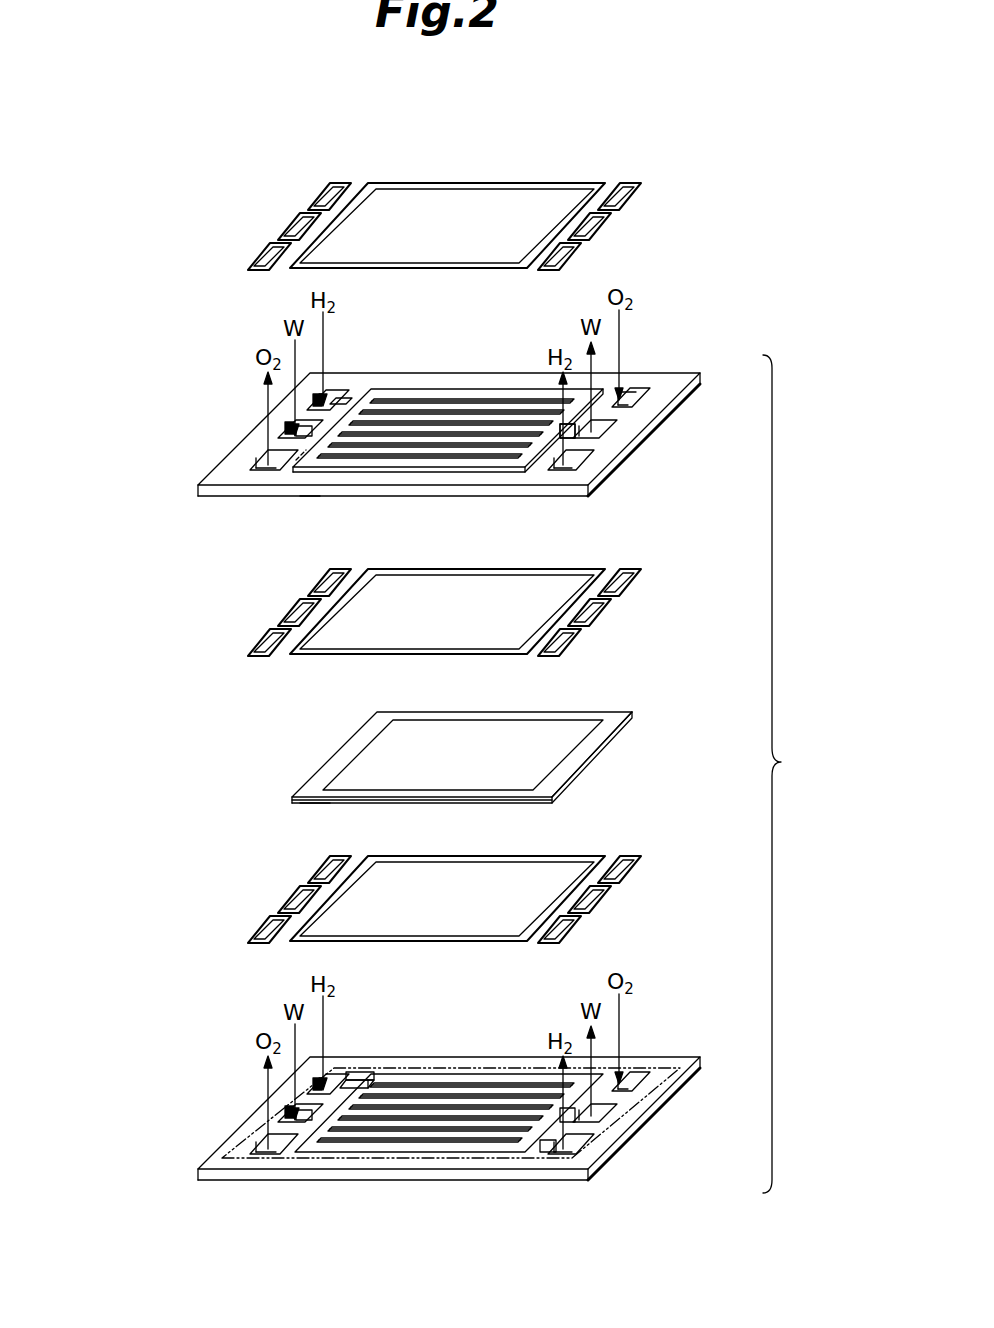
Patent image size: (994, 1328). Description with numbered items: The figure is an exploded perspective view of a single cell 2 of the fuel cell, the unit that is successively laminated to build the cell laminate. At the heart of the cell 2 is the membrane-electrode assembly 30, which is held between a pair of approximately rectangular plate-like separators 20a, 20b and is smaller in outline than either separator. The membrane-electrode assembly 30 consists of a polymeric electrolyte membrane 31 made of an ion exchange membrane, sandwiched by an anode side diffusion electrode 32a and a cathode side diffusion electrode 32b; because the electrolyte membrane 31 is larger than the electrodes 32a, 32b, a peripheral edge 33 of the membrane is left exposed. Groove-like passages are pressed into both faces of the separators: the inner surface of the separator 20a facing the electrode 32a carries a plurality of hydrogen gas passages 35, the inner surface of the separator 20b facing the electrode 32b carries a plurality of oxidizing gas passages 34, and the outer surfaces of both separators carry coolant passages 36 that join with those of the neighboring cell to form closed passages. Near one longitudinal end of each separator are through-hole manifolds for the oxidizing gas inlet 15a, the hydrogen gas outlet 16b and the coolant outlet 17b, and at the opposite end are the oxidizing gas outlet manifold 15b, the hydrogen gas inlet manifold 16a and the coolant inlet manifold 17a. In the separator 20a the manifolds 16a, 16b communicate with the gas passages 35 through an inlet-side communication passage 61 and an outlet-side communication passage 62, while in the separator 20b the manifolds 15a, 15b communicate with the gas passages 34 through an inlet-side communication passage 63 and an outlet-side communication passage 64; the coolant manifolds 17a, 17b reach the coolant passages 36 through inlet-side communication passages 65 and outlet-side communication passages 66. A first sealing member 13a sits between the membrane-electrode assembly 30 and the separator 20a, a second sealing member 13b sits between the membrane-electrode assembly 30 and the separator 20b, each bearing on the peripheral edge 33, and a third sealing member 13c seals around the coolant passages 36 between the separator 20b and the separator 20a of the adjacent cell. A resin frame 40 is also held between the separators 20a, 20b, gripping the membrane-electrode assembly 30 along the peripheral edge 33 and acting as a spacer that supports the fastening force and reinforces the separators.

The cell 2 is at (782, 774).
The first sealing member 13a is at (262, 885).
The second sealing member 13b is at (262, 598).
The third sealing member 13c is at (262, 212).
The manifold on the inlet side of the oxidizing gas 15a is at (258, 463).
The manifold on the outlet side of the oxidizing gas 15b is at (640, 400).
The manifold on the inlet side of the hydrogen gas 16a is at (566, 470).
The manifold on the outlet side of the hydrogen gas 16b is at (310, 400).
The manifold on the inlet side of the coolant 17a is at (605, 432).
The manifold on the outlet side of the coolant 17b is at (286, 428).
The separator 20a is at (188, 1181).
The separator 20b is at (190, 492).
The membrane-electrode assembly 30 is at (203, 715).
The polymeric electrolyte membrane 31 is at (302, 785).
The anode side diffusion electrode 32a is at (322, 805).
The cathode side diffusion electrode 32b is at (345, 762).
The peripheral edge 33 is at (593, 745).
The gas passage of the oxidizing gas 34 is at (312, 497).
The gas passage of the hydrogen gas 35 is at (440, 1130).
The coolant passage 36 is at (475, 415).
The resin frame 40 is at (352, 1163).
The inlet-side communication passage 61 is at (556, 1152).
The outlet-side communication passage 62 is at (358, 1078).
The inlet-side communication passage 63 is at (292, 470).
The outlet-side communication passage 64 is at (620, 395).
The inlet-side communication passage 65 is at (588, 443).
The outlet-side communication passage 66 is at (340, 400).